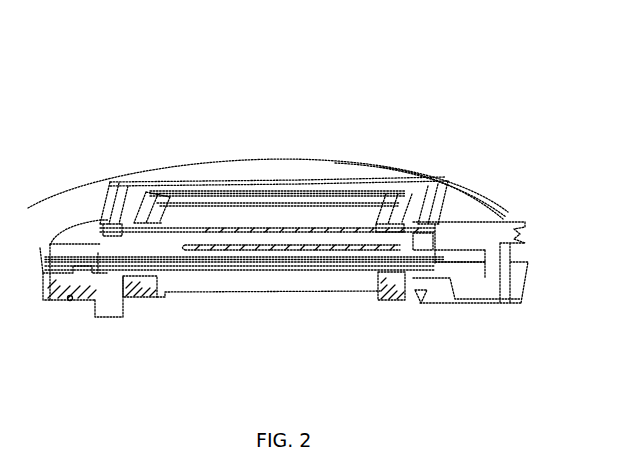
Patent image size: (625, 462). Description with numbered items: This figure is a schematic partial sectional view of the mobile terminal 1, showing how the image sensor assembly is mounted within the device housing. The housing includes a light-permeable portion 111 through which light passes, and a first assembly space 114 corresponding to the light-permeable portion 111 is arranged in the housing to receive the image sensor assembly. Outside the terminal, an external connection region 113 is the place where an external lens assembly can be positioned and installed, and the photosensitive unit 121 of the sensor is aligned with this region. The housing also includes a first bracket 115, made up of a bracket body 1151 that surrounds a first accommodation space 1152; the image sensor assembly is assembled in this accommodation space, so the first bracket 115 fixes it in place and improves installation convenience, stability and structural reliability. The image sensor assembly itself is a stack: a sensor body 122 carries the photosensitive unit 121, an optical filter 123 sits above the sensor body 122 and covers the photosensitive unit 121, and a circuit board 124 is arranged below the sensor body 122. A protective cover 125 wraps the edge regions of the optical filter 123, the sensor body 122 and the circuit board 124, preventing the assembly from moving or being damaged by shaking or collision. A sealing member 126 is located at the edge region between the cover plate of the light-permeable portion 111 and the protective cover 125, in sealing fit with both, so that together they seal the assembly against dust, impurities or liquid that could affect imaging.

The mobile terminal 1 is at (105, 70).
The light-permeable portion 111 is at (329, 170).
The external connection region 113 is at (75, 207).
The first assembly space 114 is at (255, 183).
The first bracket 115 is at (85, 400).
The bracket body 1151 is at (117, 298).
The first accommodation space 1152 is at (158, 303).
The photosensitive unit 121 is at (233, 237).
The sensor body 122 is at (280, 247).
The optical filter 123 is at (340, 208).
The circuit board 124 is at (215, 257).
The protective cover 125 is at (133, 228).
The sealing member 126 is at (118, 192).